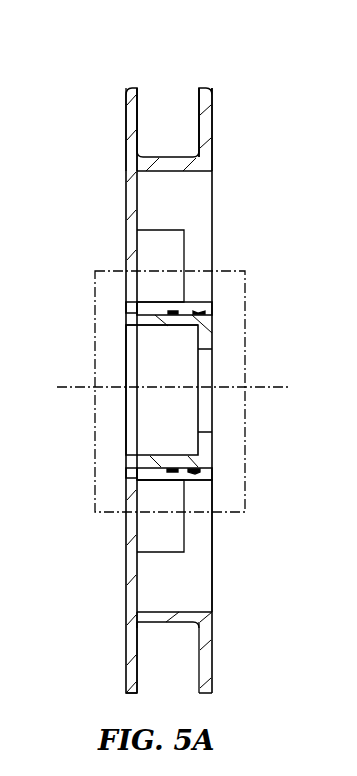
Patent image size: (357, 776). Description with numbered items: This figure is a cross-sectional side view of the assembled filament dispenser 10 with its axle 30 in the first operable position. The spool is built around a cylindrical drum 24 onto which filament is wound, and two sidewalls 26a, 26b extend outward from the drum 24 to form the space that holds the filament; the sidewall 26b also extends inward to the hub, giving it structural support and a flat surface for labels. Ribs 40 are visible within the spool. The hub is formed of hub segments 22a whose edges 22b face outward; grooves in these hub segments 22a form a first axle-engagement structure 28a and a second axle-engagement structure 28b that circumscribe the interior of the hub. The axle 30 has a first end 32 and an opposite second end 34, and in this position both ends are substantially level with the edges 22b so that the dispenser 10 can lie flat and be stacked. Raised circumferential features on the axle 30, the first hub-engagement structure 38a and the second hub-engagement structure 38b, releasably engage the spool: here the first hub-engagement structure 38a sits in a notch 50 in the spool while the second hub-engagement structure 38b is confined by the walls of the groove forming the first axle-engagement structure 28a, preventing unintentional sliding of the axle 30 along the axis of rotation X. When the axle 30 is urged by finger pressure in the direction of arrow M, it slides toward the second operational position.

The filament dispenser 10 is at (150, 58).
The cylindrical drum 24 is at (168, 155).
The sidewall 26a is at (212, 118).
The sidewall 26b is at (126, 117).
The ribs 40 is at (153, 245).
The notch 50 is at (131, 305).
The first axle-engagement structure 28a is at (173, 311).
The second axle-engagement structure 28b is at (208, 303).
The second end 34 is at (126, 318).
The axle 30 is at (135, 370).
The first end 32 is at (213, 343).
The first hub-engagement structure 38a is at (130, 471).
The second hub-engagement structure 38b is at (198, 470).
The hub segments 22a is at (158, 478).
The edges 22b is at (213, 477).
The axis of rotation X is at (278, 385).
The arrow M is at (217, 427).